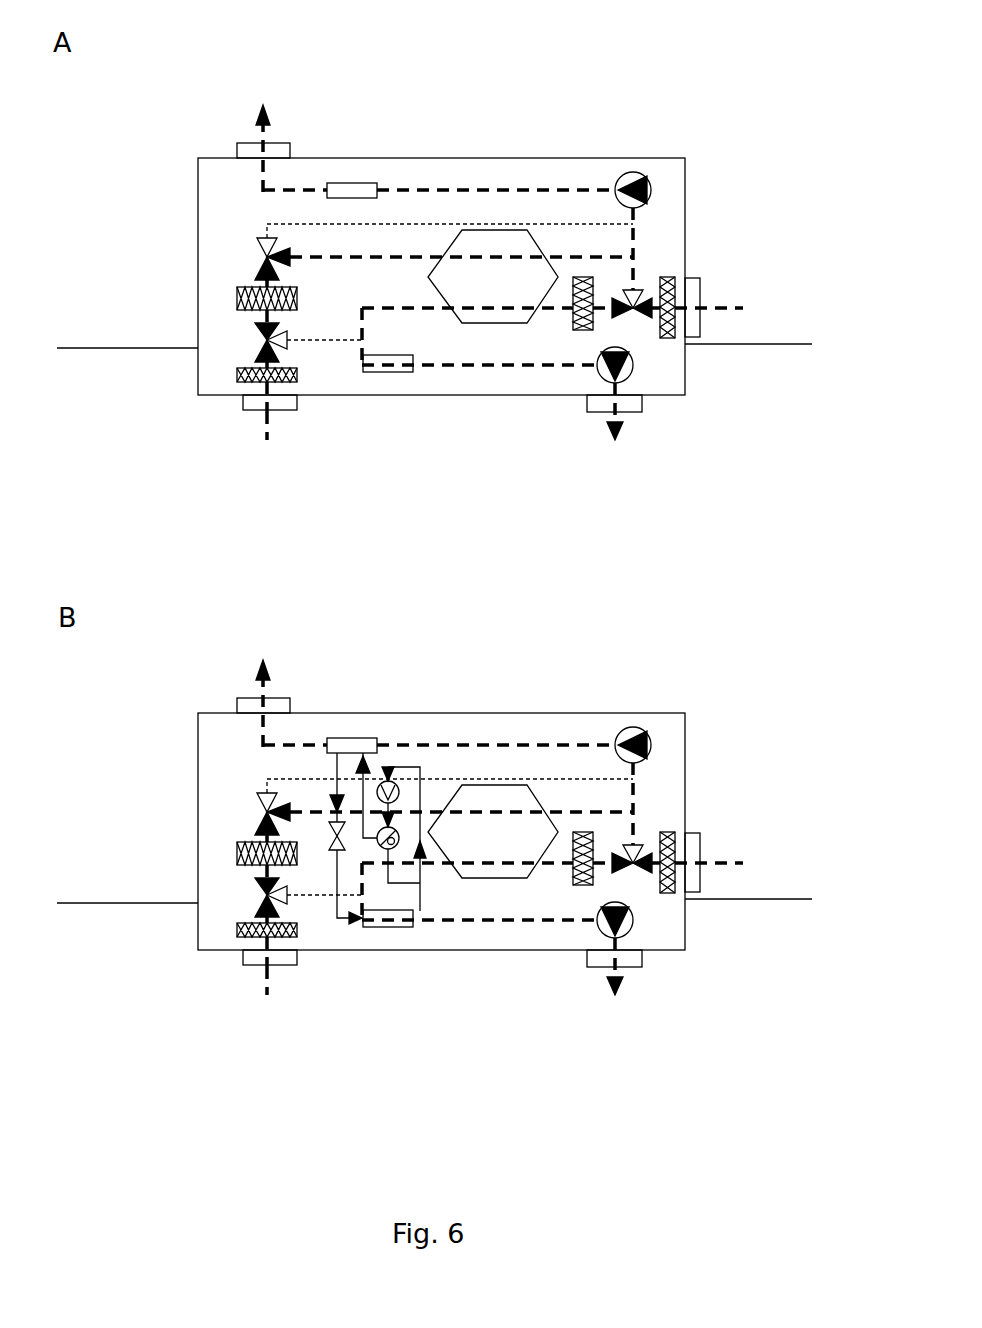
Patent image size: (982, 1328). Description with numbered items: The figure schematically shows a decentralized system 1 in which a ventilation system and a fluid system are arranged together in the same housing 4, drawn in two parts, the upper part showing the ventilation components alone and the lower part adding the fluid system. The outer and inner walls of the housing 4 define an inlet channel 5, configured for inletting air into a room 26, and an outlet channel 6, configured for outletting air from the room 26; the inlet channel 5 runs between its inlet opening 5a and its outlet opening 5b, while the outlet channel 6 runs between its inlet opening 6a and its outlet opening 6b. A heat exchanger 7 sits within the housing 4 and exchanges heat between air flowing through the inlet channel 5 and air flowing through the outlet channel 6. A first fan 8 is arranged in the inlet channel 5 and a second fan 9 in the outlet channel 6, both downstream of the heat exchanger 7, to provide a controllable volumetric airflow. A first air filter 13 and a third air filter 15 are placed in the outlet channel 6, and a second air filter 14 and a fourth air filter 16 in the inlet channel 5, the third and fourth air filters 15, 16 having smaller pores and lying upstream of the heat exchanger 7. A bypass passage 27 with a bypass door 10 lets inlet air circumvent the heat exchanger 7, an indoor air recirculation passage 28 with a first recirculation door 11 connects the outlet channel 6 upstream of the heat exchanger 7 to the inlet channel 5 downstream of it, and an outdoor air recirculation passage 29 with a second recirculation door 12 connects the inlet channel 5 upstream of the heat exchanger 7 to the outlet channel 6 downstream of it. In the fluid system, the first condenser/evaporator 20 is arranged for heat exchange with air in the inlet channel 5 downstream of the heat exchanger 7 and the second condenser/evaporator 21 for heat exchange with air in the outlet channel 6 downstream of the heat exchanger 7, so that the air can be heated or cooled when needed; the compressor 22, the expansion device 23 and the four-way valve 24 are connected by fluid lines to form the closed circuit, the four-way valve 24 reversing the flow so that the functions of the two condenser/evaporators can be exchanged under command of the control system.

The decentralized system 1 is at (182, 188).
The housing 4 is at (685, 208).
The inlet channel 5 is at (267, 438).
The inlet opening 5a is at (253, 403).
The outlet opening 5b is at (237, 150).
The outlet channel 6 is at (740, 305).
The inlet opening 6a is at (695, 293).
The outlet opening 6b is at (632, 412).
The heat exchanger 7 is at (527, 230).
The first fan 8 is at (643, 177).
The second fan 9 is at (628, 372).
The bypass door 10 is at (260, 240).
The first recirculation door 11 is at (640, 310).
The second recirculation door 12 is at (262, 343).
The first air filter 13 is at (672, 318).
The second air filter 14 is at (237, 380).
The third air filter 15 is at (573, 330).
The fourth air filter 16 is at (235, 288).
The first condenser/evaporator 20 is at (353, 193).
The second condenser/evaporator 21 is at (405, 372).
The compressor 22 is at (395, 778).
The expansion device 23 is at (342, 857).
The four-way valve 24 is at (385, 852).
The room 26 is at (60, 320).
The bypass passage 27 is at (270, 224).
The indoor air recirculation passage 28 is at (632, 272).
The outdoor air recirculation passage 29 is at (310, 343).